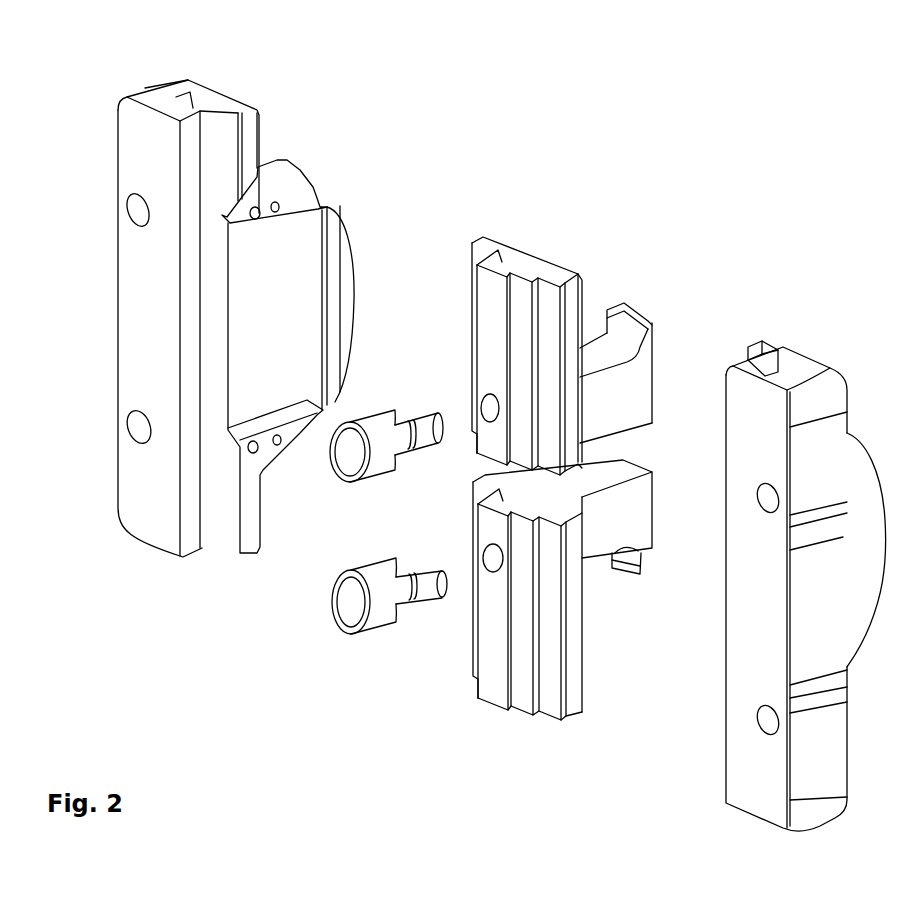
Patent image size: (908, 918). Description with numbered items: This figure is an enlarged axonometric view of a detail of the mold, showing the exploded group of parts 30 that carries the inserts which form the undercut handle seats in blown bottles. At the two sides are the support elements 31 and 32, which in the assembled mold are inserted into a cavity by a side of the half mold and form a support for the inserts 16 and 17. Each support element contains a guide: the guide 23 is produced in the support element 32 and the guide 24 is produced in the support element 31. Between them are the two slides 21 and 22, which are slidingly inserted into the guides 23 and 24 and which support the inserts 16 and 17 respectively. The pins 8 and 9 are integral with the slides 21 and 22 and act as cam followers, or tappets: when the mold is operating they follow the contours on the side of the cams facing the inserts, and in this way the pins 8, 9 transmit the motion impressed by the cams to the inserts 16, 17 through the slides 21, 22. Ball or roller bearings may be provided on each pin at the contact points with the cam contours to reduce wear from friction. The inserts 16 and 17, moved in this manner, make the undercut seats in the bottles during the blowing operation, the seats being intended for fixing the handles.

The fastening assembly 30 is at (733, 157).
The guide 23 is at (187, 100).
The support element 32 is at (247, 104).
The pin 8 is at (373, 435).
The pin 9 is at (384, 612).
The slide 21 is at (515, 257).
The insert 16 is at (637, 317).
The slide 22 is at (497, 693).
The insert 17 is at (645, 570).
The support element 31 is at (790, 360).
The guide 24 is at (775, 374).